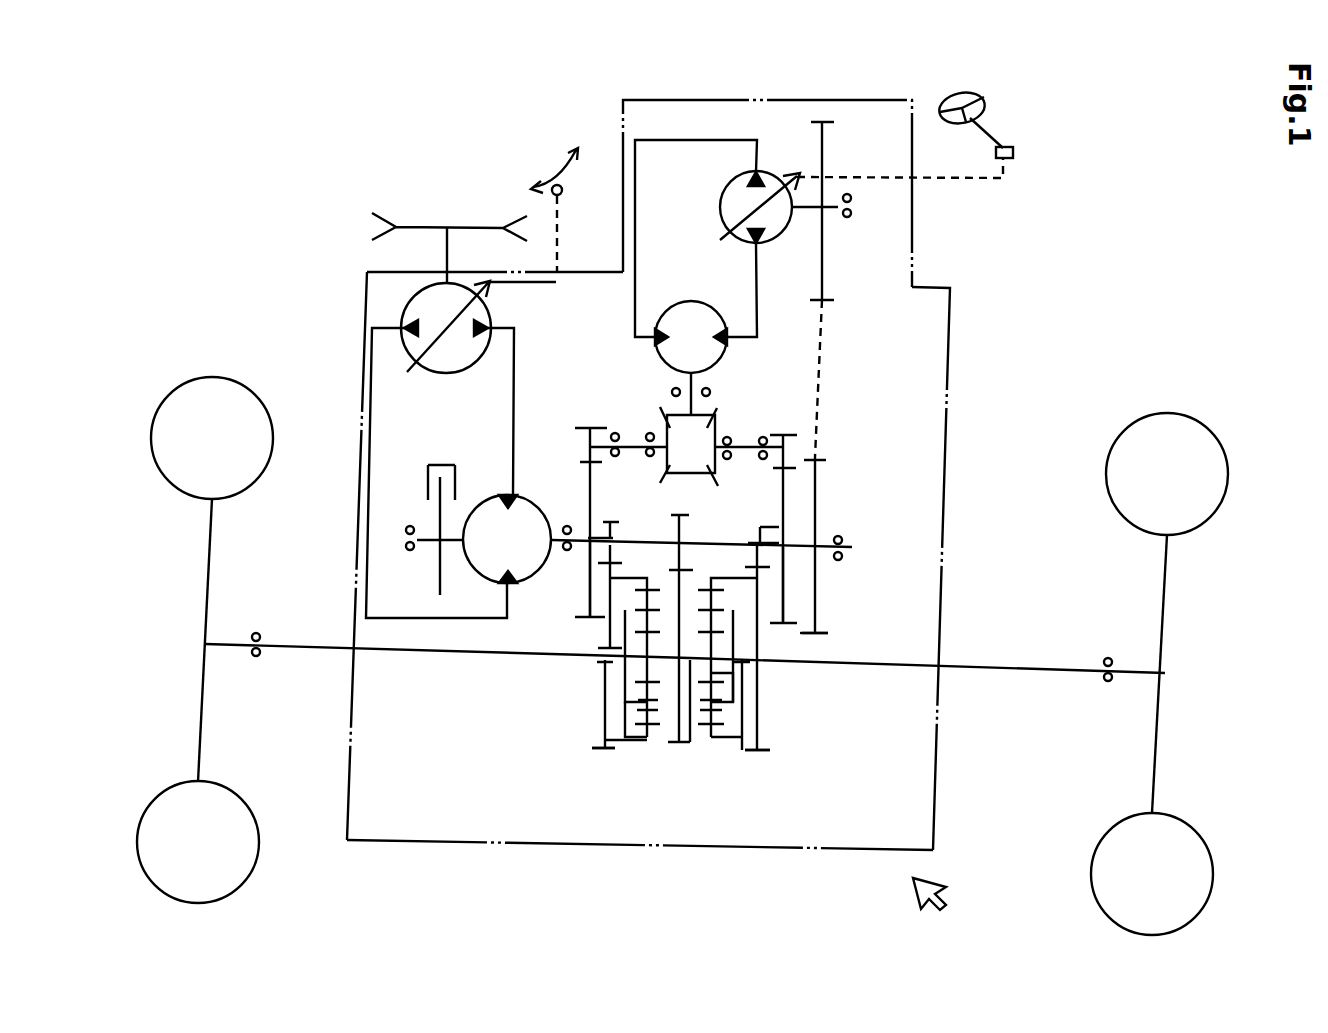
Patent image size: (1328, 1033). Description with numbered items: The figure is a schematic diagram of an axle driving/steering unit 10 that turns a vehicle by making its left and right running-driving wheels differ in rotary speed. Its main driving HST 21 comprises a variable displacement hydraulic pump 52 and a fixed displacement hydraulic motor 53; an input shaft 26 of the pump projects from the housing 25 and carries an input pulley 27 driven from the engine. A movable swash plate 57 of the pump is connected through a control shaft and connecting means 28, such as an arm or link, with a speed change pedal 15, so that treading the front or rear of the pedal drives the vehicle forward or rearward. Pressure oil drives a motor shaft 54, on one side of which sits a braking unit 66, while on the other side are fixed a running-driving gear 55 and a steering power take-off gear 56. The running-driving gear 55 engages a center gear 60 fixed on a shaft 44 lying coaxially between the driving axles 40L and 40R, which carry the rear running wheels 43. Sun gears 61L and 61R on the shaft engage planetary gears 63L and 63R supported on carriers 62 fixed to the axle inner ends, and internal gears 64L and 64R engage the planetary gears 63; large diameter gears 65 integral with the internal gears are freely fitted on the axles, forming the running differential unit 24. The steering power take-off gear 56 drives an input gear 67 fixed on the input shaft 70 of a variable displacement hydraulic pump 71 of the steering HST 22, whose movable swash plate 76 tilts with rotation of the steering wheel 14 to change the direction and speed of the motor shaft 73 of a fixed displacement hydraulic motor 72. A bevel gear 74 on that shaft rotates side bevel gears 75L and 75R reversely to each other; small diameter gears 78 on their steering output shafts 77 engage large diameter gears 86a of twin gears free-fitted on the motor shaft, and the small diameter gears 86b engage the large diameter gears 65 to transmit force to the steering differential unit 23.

The axle driving/steering unit 10 is at (951, 906).
The steering wheel 14 is at (988, 104).
The speed change pedal 15 is at (562, 170).
The main driving HST 21 is at (296, 357).
The steering HST 22 is at (610, 194).
The steering differential unit 23 is at (786, 780).
The running differential unit 24 is at (680, 824).
The housing 25 is at (955, 330).
The input shaft 26 is at (447, 254).
The input pulley 27 is at (478, 227).
The connecting means 28 is at (556, 258).
The left running-driving axle 40L is at (425, 657).
The right running-driving axle 40R is at (1030, 664).
The rear running wheel 43 is at (218, 377).
The shaft 44 is at (690, 715).
The variable displacement hydraulic pump 52 is at (404, 302).
The fixed displacement hydraulic motor 53 is at (495, 495).
The motor shaft 54 is at (573, 532).
The running-driving gear 55 is at (762, 525).
The steering power take-off gear 56 is at (820, 470).
The movable swash plate 57 is at (492, 298).
The center gear 60 is at (678, 742).
The left sun gear 61L is at (630, 660).
The right sun gear 61R is at (735, 688).
The carrier 62 is at (640, 680).
The planetary gear 63 is at (815, 634).
The left planetary gear 63L is at (645, 720).
The right planetary gear 63R is at (715, 735).
The left internal gear 64L is at (633, 742).
The right internal gear 64R is at (748, 790).
The large diameter gear 65 is at (605, 748).
The braking unit 66 is at (433, 468).
The input gear 67 is at (826, 134).
The input shaft 70 is at (838, 218).
The variable displacement hydraulic pump 71 is at (728, 190).
The fixed displacement hydraulic motor 72 is at (683, 300).
The motor shaft 73 is at (700, 374).
The bevel gear 74 is at (712, 420).
The left side bevel gear 75L is at (615, 520).
The right side bevel gear 75R is at (722, 470).
The movable swash plate 76 is at (788, 178).
The steering output shaft 77 is at (600, 432).
The small diameter gear 78 is at (588, 462).
The large diameter gear of twin gear 86a is at (592, 618).
The small diameter gear of twin gear 86b is at (642, 505).